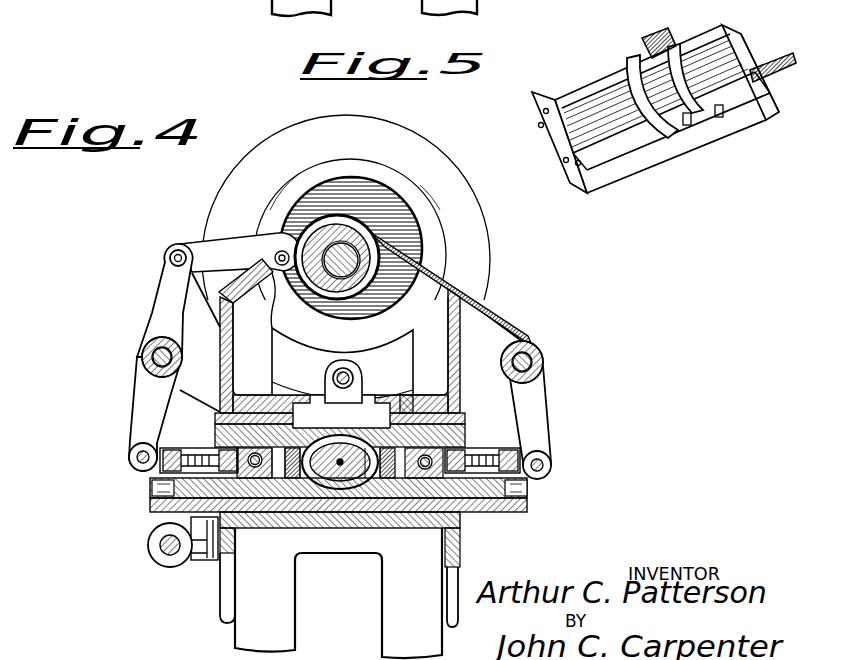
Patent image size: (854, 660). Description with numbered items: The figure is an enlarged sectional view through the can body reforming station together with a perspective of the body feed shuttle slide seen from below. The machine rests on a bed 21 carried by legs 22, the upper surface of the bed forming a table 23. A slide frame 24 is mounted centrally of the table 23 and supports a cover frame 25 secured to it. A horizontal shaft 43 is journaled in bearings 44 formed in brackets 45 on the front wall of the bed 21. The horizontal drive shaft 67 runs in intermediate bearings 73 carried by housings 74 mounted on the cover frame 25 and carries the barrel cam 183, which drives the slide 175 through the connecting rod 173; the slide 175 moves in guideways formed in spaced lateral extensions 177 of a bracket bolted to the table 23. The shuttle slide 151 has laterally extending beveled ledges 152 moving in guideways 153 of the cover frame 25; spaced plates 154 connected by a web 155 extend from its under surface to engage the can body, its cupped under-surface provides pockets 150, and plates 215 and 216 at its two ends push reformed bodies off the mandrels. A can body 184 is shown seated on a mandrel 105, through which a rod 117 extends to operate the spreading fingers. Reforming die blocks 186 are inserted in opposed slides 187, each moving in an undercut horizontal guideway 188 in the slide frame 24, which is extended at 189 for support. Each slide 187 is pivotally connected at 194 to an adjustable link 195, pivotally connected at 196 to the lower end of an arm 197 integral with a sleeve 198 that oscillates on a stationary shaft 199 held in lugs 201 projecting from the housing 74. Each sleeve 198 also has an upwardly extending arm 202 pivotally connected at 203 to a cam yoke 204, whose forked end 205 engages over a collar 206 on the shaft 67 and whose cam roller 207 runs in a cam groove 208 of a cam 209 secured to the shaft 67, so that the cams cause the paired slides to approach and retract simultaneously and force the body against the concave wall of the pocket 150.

In FIG. 4, the barrel cam 183 is at (346, 259).
In FIG. 4, the cam 209 is at (382, 173).
In FIG. 4, the cam groove 208 is at (352, 182).
In FIG. 4, the cam roller 207 is at (282, 227).
In FIG. 4, the collar 206 is at (416, 228).
In FIG. 4, the forked end 205 is at (307, 220).
In FIG. 4, the horizontal drive shaft 67 is at (376, 276).
In FIG. 4, the cam yoke 204 is at (240, 252).
In FIG. 4, the pivotal connection 203 is at (170, 254).
In FIG. 4, the upwardly extending arm 202 is at (160, 298).
In FIG. 4, the sleeve 198 is at (150, 346).
In FIG. 4, the stationary shaft 199 is at (152, 356).
In FIG. 4, the arm 197 is at (137, 398).
In FIG. 4, the lugs 201 is at (526, 315).
In FIG. 4, the intermediate bearings 73 is at (440, 254).
In FIG. 4, the housing 74 is at (480, 290).
In FIG. 4, the guideways 153 is at (220, 419).
In FIG. 4, the ledges 152 is at (462, 420).
In FIG. 5, the ledges 152 is at (535, 97).
In FIG. 4, the cover frame 25 is at (452, 439).
In FIG. 4, the pocket 150 is at (322, 478).
In FIG. 5, the pocket 150 is at (656, 93).
In FIG. 4, the shuttle slide 151 is at (405, 397).
In FIG. 5, the shuttle slide 151 is at (737, 127).
In FIG. 4, the slide 175 is at (368, 402).
In FIG. 4, the lateral extensions 177 is at (307, 403).
In FIG. 4, the connecting rod 173 is at (342, 372).
In FIG. 5, the connecting rod 173 is at (786, 75).
In FIG. 4, the adjustable link 195 is at (205, 448).
In FIG. 4, the pivotal connection 196 is at (129, 457).
In FIG. 4, the die blocks 186 is at (255, 468).
In FIG. 4, the pivotal connection 194 is at (227, 570).
In FIG. 4, the can body 184 is at (340, 466).
In FIG. 4, the mandrel 105 is at (312, 487).
In FIG. 4, the rod 117 is at (325, 473).
In FIG. 4, the table 23 is at (367, 490).
In FIG. 4, the slide 187 is at (150, 492).
In FIG. 4, the horizontal guideway 188 is at (150, 482).
In FIG. 4, the frame extension 189 is at (216, 511).
In FIG. 4, the slide frame 24 is at (461, 524).
In FIG. 4, the bed 21 is at (460, 554).
In FIG. 4, the legs 22 is at (441, 640).
In FIG. 4, the brackets 45 is at (192, 519).
In FIG. 4, the bearings 44 is at (148, 545).
In FIG. 4, the horizontal shaft 43 is at (165, 549).
In FIG. 5, the spaced plates 154 is at (684, 100).
In FIG. 5, the web 155 is at (660, 58).
In FIG. 5, the plate 215 is at (557, 123).
In FIG. 5, the plate 216 is at (744, 56).